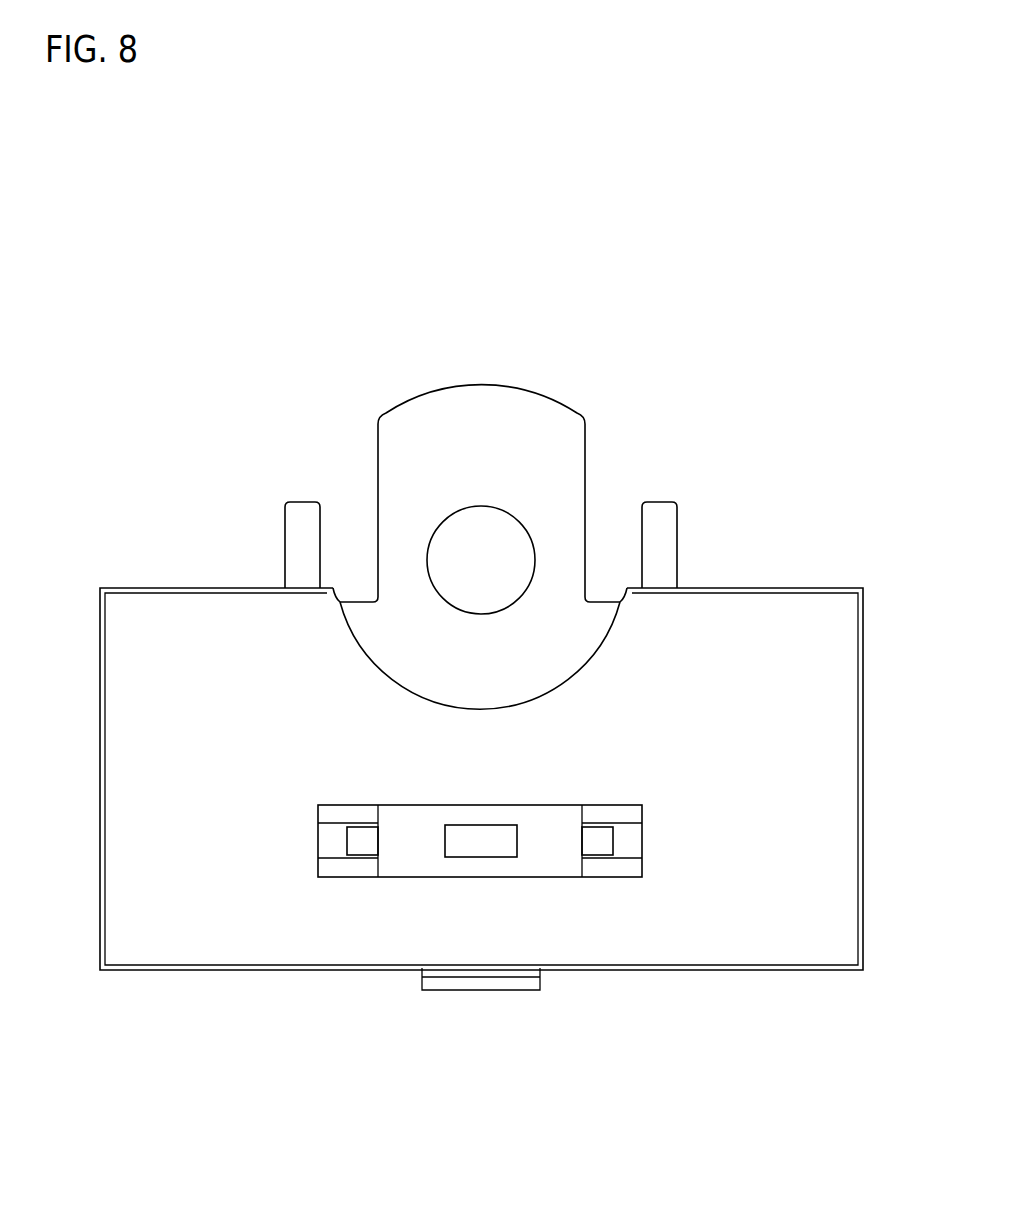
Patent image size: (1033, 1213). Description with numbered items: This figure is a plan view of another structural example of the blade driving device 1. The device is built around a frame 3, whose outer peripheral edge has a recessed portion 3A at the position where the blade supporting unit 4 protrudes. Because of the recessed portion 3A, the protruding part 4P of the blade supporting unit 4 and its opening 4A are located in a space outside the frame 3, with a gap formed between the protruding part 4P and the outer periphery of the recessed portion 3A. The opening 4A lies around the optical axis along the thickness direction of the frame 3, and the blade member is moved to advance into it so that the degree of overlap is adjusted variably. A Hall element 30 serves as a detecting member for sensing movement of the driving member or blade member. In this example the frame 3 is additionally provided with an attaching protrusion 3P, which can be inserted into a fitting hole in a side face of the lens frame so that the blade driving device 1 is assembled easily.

The blade driving device 1 is at (824, 492).
The frame 3 is at (863, 765).
The attaching protrusion 3P is at (285, 542).
The recessed portion 3A is at (560, 688).
The Hall element 30 is at (503, 858).
The blade supporting unit 4 is at (540, 391).
The protruding part 4P is at (480, 470).
The opening 4A is at (478, 509).